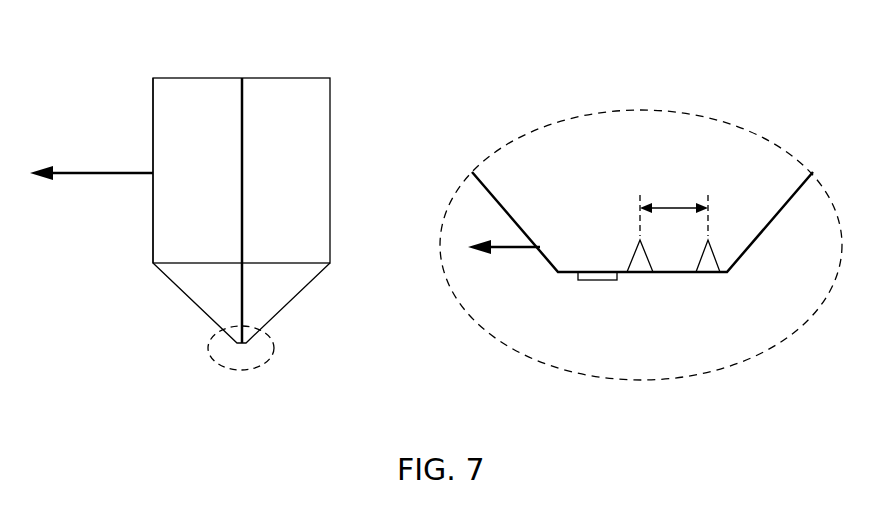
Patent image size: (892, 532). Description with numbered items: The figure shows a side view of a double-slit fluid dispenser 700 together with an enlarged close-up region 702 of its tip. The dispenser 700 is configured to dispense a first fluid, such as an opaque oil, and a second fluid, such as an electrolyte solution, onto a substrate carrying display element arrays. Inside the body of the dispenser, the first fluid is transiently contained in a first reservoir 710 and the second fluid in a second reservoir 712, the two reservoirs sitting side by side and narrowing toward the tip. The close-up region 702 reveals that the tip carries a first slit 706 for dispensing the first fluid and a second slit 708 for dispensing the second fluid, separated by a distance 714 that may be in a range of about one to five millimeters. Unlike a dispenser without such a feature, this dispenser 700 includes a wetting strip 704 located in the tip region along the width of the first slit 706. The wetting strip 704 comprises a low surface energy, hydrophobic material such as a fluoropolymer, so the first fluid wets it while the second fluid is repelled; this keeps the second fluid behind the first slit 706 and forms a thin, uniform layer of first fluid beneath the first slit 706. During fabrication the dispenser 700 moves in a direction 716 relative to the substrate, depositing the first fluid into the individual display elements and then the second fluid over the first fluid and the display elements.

The double-slit fluid dispenser 700 is at (287, 50).
The close-up region 702 is at (214, 360).
The wetting strip 704 is at (605, 281).
The first slit 706 is at (642, 285).
The second slit 708 is at (711, 285).
The first reservoir 710 is at (210, 198).
The second reservoir 712 is at (306, 198).
The distance 714 is at (675, 205).
The direction 716 is at (105, 172).